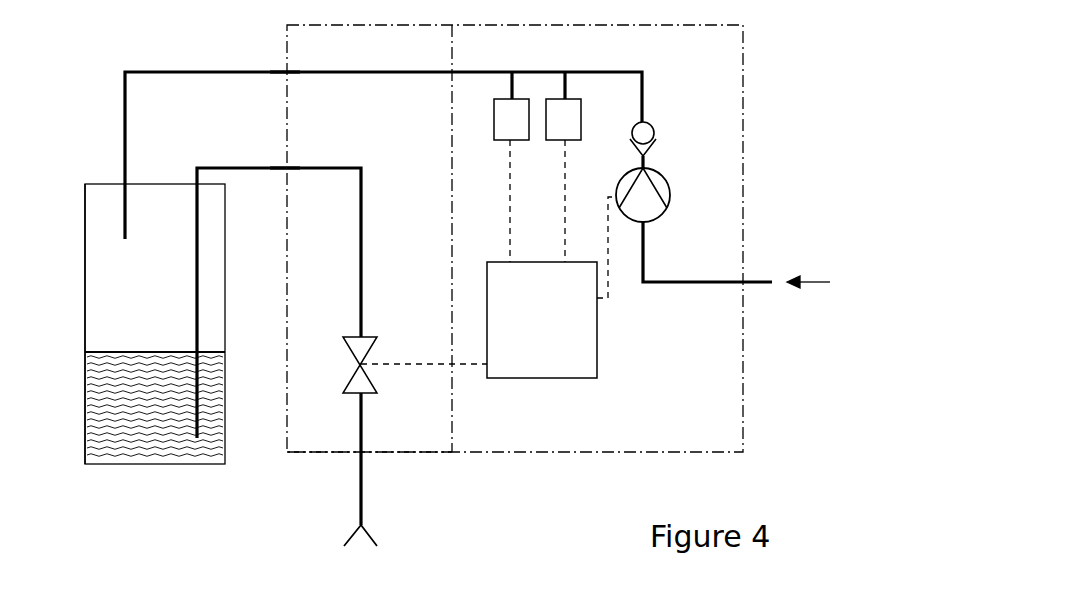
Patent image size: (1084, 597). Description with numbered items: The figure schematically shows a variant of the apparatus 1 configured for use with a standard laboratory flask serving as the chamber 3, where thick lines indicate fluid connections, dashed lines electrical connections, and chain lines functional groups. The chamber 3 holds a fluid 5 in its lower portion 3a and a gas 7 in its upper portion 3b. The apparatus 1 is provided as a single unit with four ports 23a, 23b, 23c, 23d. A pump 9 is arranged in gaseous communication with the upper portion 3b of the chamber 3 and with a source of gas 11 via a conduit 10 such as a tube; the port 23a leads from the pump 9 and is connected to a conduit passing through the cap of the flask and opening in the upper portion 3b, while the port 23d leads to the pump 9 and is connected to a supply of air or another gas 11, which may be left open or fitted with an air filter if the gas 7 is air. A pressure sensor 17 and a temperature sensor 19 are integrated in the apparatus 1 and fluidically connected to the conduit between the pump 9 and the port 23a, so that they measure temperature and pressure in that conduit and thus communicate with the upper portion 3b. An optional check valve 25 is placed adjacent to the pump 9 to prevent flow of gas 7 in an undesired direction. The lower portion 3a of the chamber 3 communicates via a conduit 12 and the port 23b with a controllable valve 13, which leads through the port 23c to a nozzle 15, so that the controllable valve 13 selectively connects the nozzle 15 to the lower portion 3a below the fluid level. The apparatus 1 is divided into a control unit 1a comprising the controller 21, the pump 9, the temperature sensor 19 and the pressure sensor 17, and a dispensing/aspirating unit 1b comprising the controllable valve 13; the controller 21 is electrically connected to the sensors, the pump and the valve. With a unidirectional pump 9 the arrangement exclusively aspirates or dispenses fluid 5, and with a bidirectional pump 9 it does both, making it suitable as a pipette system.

The apparatus 1 is at (745, 100).
The control unit 1a is at (598, 452).
The dispensing/aspirating unit 1b is at (420, 452).
The chamber 3 is at (84, 297).
The lower portion of chamber 3a is at (73, 420).
The upper portion of chamber 3b is at (73, 326).
The fluid 5 is at (173, 445).
The gas 7 is at (152, 201).
The pump 9 is at (670, 203).
The conduit 10 is at (382, 73).
The source of gas 11 is at (859, 296).
The conduit 12 is at (330, 170).
The controllable valve 13 is at (377, 395).
The nozzle 15 is at (366, 532).
The pressure sensor 17 is at (582, 122).
The temperature sensor 19 is at (493, 134).
The controller 21 is at (551, 287).
The port 23a is at (287, 71).
The port 23b is at (287, 167).
The port 23c is at (358, 456).
The port 23d is at (745, 266).
The check valve 25 is at (655, 150).